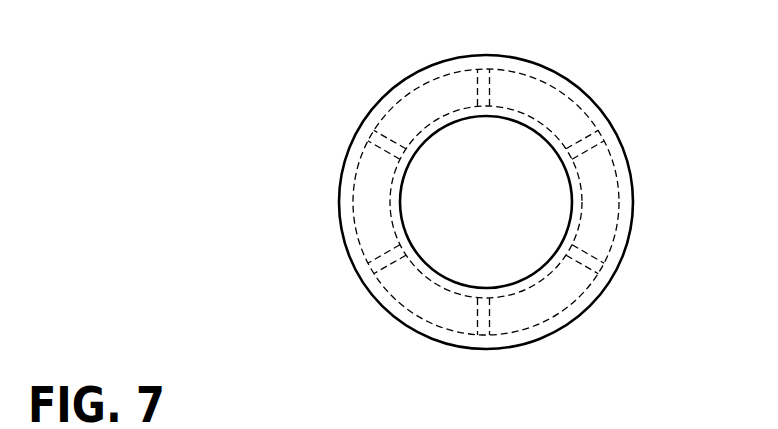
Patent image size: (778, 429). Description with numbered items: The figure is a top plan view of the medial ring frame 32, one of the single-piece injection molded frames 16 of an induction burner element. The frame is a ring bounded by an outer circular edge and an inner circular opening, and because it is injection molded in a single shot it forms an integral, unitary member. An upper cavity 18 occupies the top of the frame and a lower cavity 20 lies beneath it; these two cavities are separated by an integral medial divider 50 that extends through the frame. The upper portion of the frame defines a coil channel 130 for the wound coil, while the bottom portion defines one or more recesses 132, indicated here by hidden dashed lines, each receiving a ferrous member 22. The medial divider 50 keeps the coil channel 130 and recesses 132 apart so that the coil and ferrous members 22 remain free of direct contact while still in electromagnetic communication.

The injection molded frame 16 is at (489, 201).
The upper cavity 18 is at (560, 74).
The lower cavity 20 is at (366, 195).
The ferrous member 22 is at (595, 212).
The medial ring frame 32 is at (622, 118).
The integral medial divider 50 is at (560, 292).
The coil channel 130 is at (417, 283).
The recess 132 is at (450, 308).